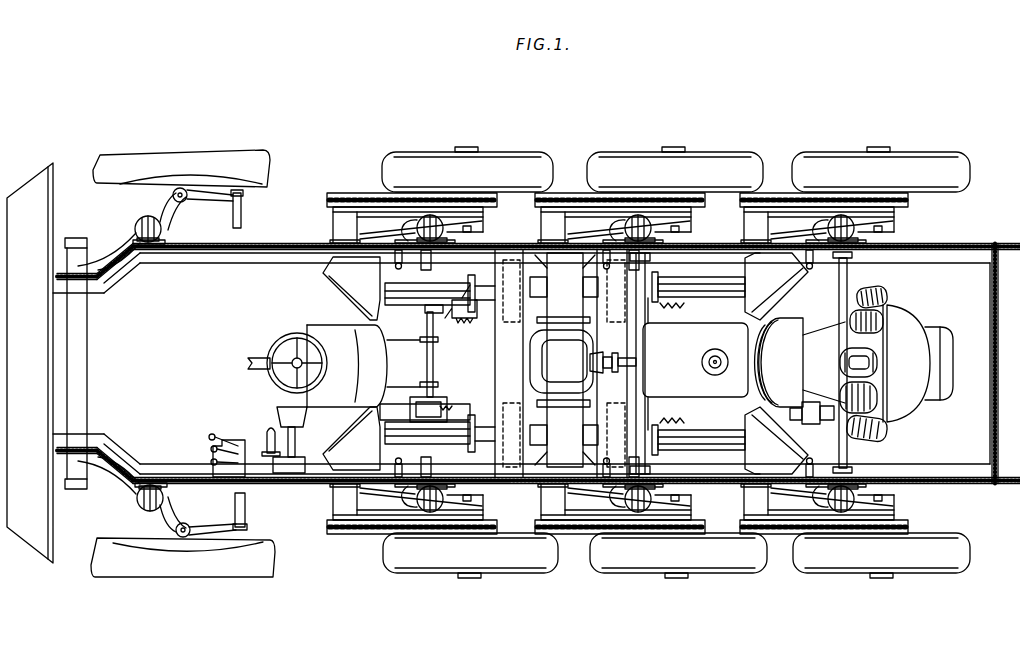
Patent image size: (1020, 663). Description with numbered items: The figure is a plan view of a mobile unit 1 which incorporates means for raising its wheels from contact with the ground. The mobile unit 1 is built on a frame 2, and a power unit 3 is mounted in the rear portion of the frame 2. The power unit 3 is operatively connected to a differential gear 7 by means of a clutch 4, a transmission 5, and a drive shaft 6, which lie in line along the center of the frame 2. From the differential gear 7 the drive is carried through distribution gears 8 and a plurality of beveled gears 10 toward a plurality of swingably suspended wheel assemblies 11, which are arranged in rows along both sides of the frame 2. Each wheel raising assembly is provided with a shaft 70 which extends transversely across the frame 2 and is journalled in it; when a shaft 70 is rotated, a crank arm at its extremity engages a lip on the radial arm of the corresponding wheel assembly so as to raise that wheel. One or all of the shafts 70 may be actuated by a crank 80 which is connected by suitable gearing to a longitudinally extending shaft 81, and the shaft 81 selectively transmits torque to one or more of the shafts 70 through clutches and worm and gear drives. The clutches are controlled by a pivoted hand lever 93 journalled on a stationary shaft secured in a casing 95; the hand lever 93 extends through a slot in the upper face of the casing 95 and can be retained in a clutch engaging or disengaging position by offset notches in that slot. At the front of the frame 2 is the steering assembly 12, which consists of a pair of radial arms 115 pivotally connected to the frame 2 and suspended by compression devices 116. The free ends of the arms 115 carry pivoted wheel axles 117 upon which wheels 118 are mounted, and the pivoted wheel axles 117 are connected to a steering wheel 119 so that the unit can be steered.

The mobile unit 1 is at (972, 243).
The frame 2 is at (960, 484).
The power unit 3 is at (897, 320).
The clutch 4 is at (787, 340).
The transmission 5 is at (700, 325).
The drive shaft 6 is at (620, 358).
The differential gear 7 is at (548, 358).
The distribution gears 8 is at (550, 268).
The beveled gears 10 is at (340, 279).
The swingably suspended wheel assemblies 11 is at (372, 181).
The steering assembly 12 is at (140, 204).
The shaft 70 is at (432, 366).
The crank 80 is at (268, 433).
The longitudinally extending shaft 81 is at (485, 408).
The hand lever 93 is at (210, 462).
The casing 95 is at (230, 440).
The radial arms 115 is at (119, 240).
The compression devices 116 is at (163, 230).
The pivoted wheel axles 117 is at (185, 190).
The wheels 118 is at (258, 158).
The steering wheel 119 is at (275, 337).